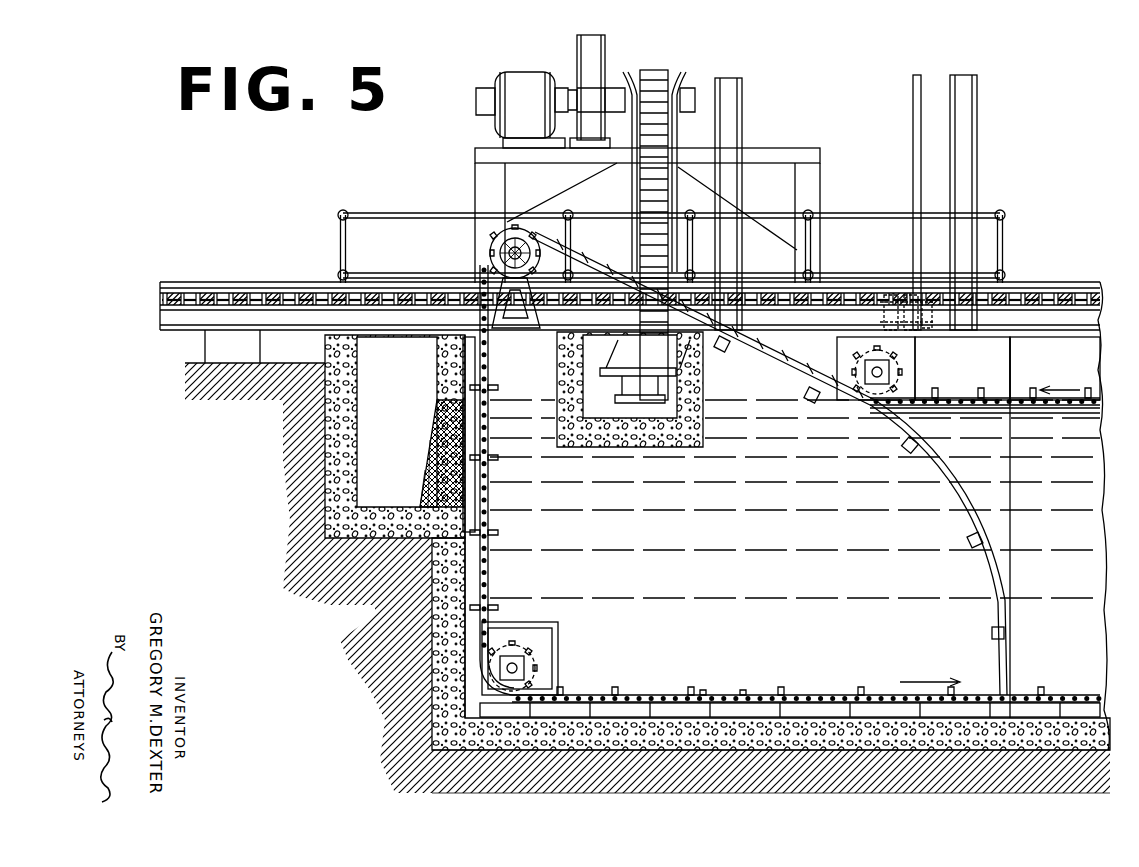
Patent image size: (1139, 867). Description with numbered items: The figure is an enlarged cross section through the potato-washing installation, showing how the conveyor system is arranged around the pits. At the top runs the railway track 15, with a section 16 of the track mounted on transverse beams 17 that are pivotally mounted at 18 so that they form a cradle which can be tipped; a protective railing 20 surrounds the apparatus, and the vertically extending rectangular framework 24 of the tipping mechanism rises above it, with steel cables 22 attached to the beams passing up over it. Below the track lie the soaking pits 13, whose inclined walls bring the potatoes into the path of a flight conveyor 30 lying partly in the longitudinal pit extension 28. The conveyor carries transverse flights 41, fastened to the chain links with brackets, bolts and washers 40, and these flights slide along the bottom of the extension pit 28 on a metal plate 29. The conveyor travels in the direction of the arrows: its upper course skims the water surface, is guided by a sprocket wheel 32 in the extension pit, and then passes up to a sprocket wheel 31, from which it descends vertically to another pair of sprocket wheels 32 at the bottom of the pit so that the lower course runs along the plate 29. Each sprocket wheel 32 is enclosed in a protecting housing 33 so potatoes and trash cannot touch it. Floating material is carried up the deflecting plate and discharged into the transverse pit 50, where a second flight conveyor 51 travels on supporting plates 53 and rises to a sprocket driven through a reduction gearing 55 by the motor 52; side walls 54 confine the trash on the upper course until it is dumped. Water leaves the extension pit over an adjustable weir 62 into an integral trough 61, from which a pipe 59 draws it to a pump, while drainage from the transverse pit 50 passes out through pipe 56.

The soaking pit 13 is at (1072, 384).
The railway track 15 is at (283, 283).
The track section 16 is at (1080, 311).
The transverse beam 17 is at (940, 337).
The pivot mounting 18 is at (883, 318).
The protective railing 20 is at (444, 216).
The steel cable 22 is at (913, 145).
The rectangular framework 24 is at (744, 118).
The longitudinal pit extension 28 is at (735, 652).
The plate 29 is at (838, 695).
The flight conveyor 30 is at (971, 400).
The sprocket wheel 31 is at (494, 252).
The guiding sprocket wheel 32 is at (836, 352).
The protecting housing 33 is at (558, 631).
The washer 40 is at (964, 497).
The transverse flight 41 is at (754, 690).
The transverse pit 50 is at (703, 384).
The flight conveyor 51 is at (657, 80).
The motor 52 is at (539, 68).
The supporting plate 53 is at (628, 382).
The side wall 54 is at (634, 76).
The reduction gearing 55 is at (580, 42).
The drainage pipe 56 is at (556, 798).
The pipe 59 is at (378, 604).
The trough 61 is at (357, 430).
The weir 62 is at (425, 462).